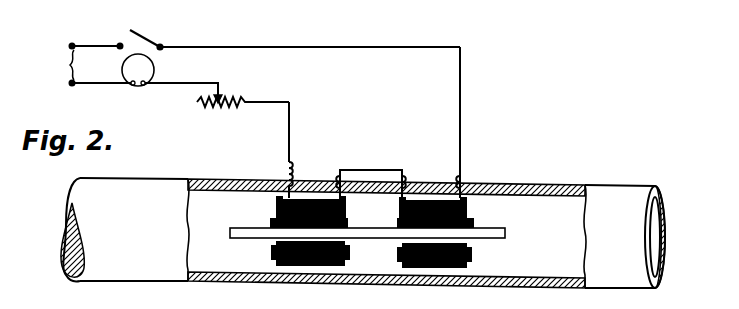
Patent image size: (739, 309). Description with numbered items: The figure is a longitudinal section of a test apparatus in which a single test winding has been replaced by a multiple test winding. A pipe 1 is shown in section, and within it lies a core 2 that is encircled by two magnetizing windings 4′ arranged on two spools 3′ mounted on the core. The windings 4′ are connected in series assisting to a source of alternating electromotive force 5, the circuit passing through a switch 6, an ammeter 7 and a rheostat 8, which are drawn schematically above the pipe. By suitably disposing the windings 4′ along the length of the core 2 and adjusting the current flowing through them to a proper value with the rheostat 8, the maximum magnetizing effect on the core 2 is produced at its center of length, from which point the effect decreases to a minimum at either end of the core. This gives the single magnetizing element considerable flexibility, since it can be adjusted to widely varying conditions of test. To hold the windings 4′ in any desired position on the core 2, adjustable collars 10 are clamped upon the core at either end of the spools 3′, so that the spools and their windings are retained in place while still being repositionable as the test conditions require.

The pipe 1 is at (599, 186).
The core 2 is at (505, 233).
The spool 3′ is at (276, 208).
The magnetizing winding 4′ is at (305, 212).
The source of alternating electromotive force 5 is at (62, 66).
The switch 6 is at (140, 36).
The ammeter 7 is at (142, 87).
The rheostat 8 is at (238, 100).
The adjustable collar 10 is at (272, 254).